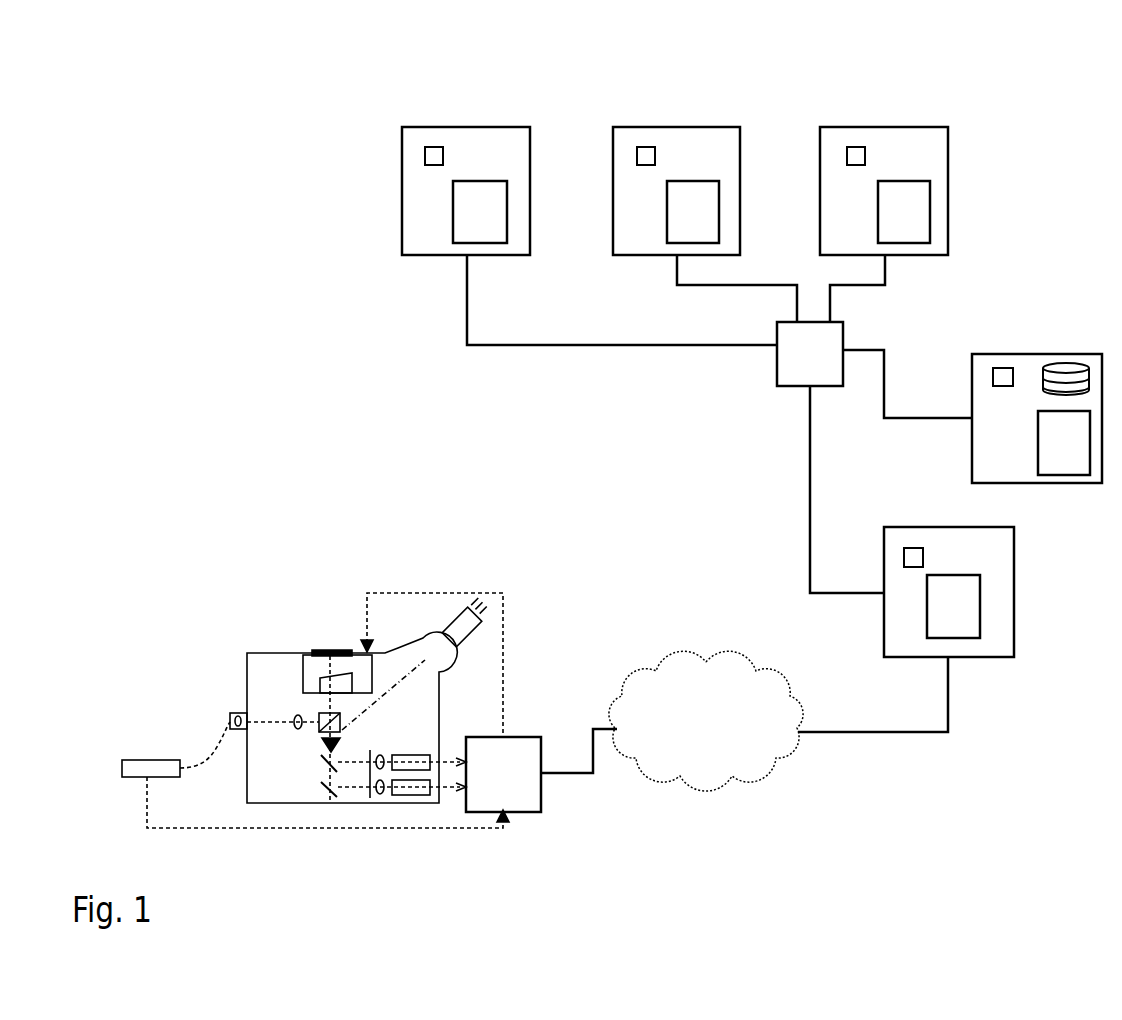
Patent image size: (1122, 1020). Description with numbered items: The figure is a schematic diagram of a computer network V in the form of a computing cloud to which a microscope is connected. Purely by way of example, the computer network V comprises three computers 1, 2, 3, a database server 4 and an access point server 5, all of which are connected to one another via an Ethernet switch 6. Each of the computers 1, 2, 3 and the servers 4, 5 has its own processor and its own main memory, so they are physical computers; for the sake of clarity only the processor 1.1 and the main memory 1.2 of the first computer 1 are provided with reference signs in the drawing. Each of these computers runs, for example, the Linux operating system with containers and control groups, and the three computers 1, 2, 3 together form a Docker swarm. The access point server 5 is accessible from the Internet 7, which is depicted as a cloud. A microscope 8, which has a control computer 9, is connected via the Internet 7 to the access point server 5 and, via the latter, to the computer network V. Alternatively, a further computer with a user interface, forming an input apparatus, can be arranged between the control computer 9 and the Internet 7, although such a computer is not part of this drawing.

The first computer 1 is at (431, 127).
The processor 1.1 is at (425, 156).
The main memory 1.2 is at (453, 212).
The computer 2 is at (653, 127).
The computer 3 is at (855, 127).
The database server 4 is at (1037, 354).
The access point server 5 is at (995, 657).
The Ethernet switch 6 is at (777, 386).
The Internet 7 is at (710, 745).
The microscope 8 is at (247, 683).
The control computer 9 is at (522, 812).
The computer network V is at (277, 253).